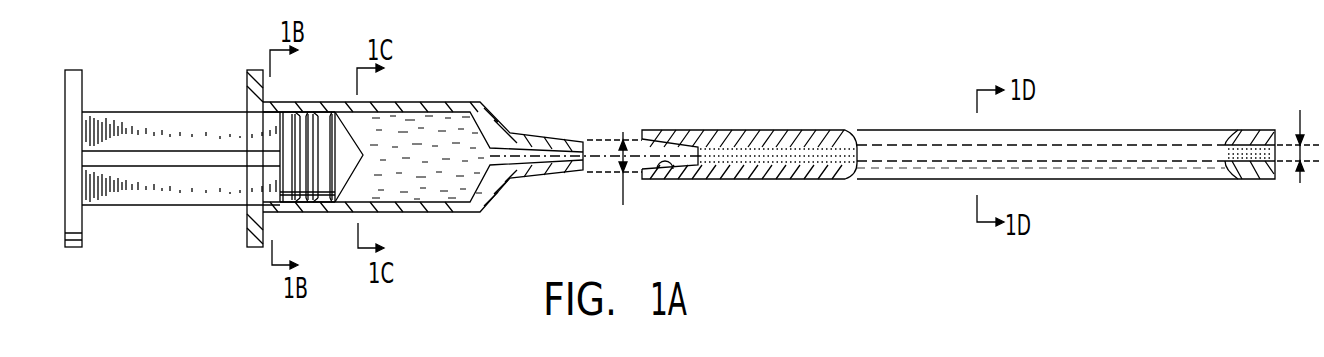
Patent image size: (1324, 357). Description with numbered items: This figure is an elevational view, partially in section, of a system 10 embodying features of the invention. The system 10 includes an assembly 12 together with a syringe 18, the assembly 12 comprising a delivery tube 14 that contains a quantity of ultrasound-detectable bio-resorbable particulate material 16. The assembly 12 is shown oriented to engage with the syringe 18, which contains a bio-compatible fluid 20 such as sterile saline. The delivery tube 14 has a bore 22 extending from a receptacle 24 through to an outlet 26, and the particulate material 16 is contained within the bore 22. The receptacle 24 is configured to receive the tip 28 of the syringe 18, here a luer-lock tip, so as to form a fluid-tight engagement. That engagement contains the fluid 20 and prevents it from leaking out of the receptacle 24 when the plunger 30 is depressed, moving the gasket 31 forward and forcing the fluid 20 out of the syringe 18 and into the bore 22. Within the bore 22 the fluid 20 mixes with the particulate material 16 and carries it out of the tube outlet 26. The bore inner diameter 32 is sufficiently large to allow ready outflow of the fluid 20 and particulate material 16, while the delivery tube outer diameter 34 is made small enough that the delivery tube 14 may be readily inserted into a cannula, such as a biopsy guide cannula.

The system 10 is at (661, 62).
The assembly 12 is at (778, 206).
The delivery tube 14 is at (1108, 130).
The ultrasound-detectable bio-resorbable particulate material 16 is at (803, 163).
The syringe 18 is at (452, 102).
The bio-compatible fluid 20 is at (448, 193).
The bore 22 is at (790, 131).
The receptacle 24 is at (676, 172).
The outlet 26 is at (1245, 173).
The tip 28 is at (530, 133).
The plunger 30 is at (205, 207).
The gasket 31 is at (352, 178).
The bore inner diameter 32 is at (1300, 110).
The delivery tube outer diameter 34 is at (623, 205).